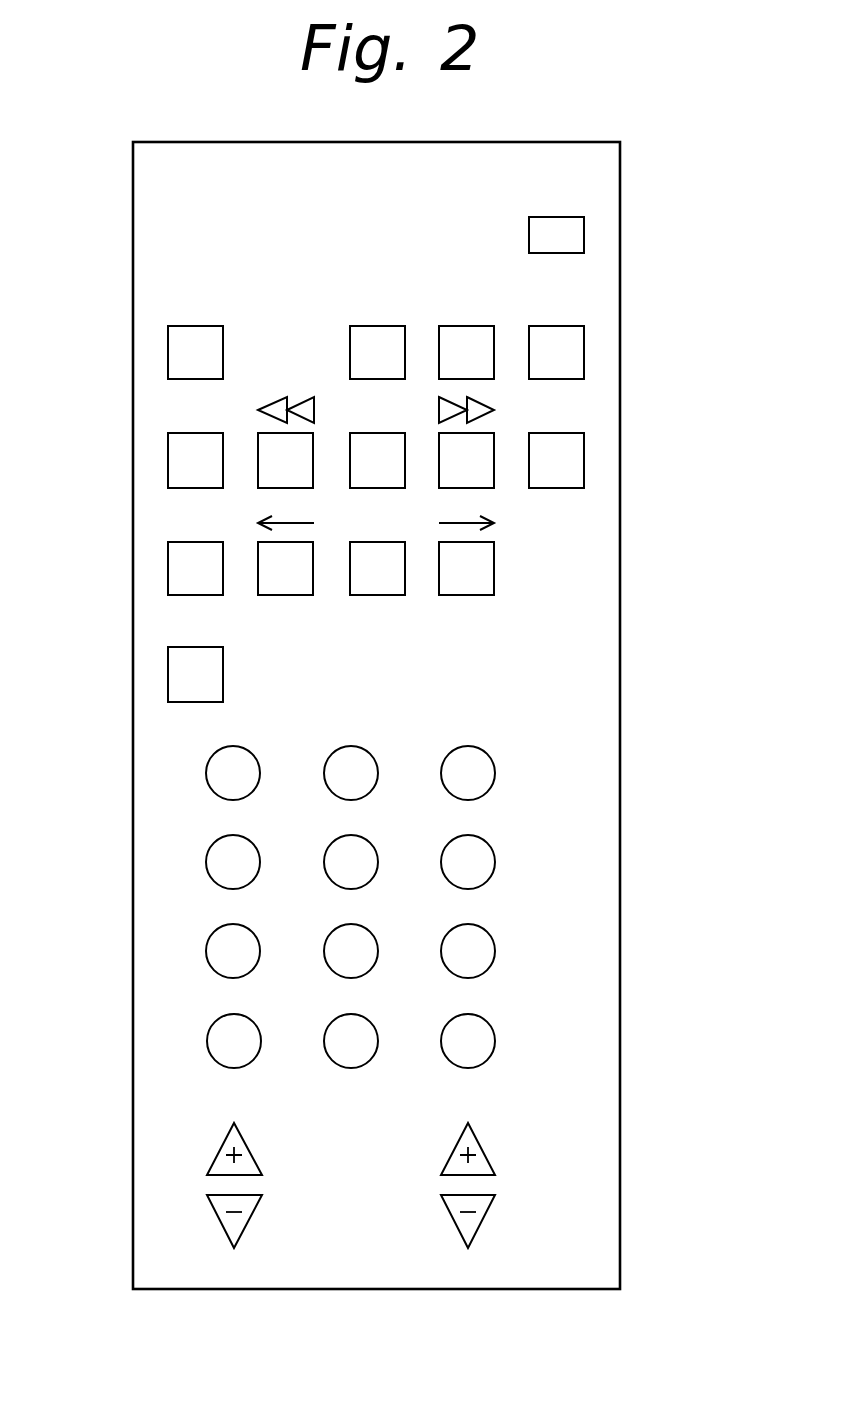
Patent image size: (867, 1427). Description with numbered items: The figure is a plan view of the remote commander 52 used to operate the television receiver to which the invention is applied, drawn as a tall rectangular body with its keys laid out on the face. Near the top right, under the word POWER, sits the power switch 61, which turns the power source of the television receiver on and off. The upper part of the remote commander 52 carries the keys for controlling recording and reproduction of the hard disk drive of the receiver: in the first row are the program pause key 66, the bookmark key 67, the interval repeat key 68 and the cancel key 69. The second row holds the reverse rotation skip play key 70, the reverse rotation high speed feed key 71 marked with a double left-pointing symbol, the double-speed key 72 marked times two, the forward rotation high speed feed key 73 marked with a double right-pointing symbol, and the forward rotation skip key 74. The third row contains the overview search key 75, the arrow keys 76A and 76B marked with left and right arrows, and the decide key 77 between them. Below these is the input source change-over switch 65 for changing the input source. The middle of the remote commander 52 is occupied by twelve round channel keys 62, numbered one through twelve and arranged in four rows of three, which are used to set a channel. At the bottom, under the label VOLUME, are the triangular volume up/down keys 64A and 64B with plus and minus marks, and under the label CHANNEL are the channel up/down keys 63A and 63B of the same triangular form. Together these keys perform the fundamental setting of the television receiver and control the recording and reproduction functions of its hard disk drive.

The remote commander 52 is at (636, 196).
The power switch 61 is at (584, 233).
The channel keys 62 is at (206, 773).
The channel up key 63A is at (478, 1143).
The channel down key 63B is at (483, 1218).
The volume up key 64A is at (222, 1147).
The volume down key 64B is at (220, 1218).
The input source change-over switch 65 is at (168, 677).
The program pause key 66 is at (168, 352).
The bookmark key 67 is at (350, 352).
The interval repeat key 68 is at (494, 357).
The cancel key 69 is at (584, 349).
The reverse rotation skip play key 70 is at (168, 460).
The reverse rotation high speed feed key 71 is at (277, 432).
The double-speed key 72 is at (377, 488).
The forward rotation high speed feed key 73 is at (465, 488).
The forward rotation skip key 74 is at (584, 458).
The overview search key 75 is at (168, 568).
The arrow key 76A is at (314, 570).
The arrow key 76B is at (494, 565).
The decide key 77 is at (378, 596).